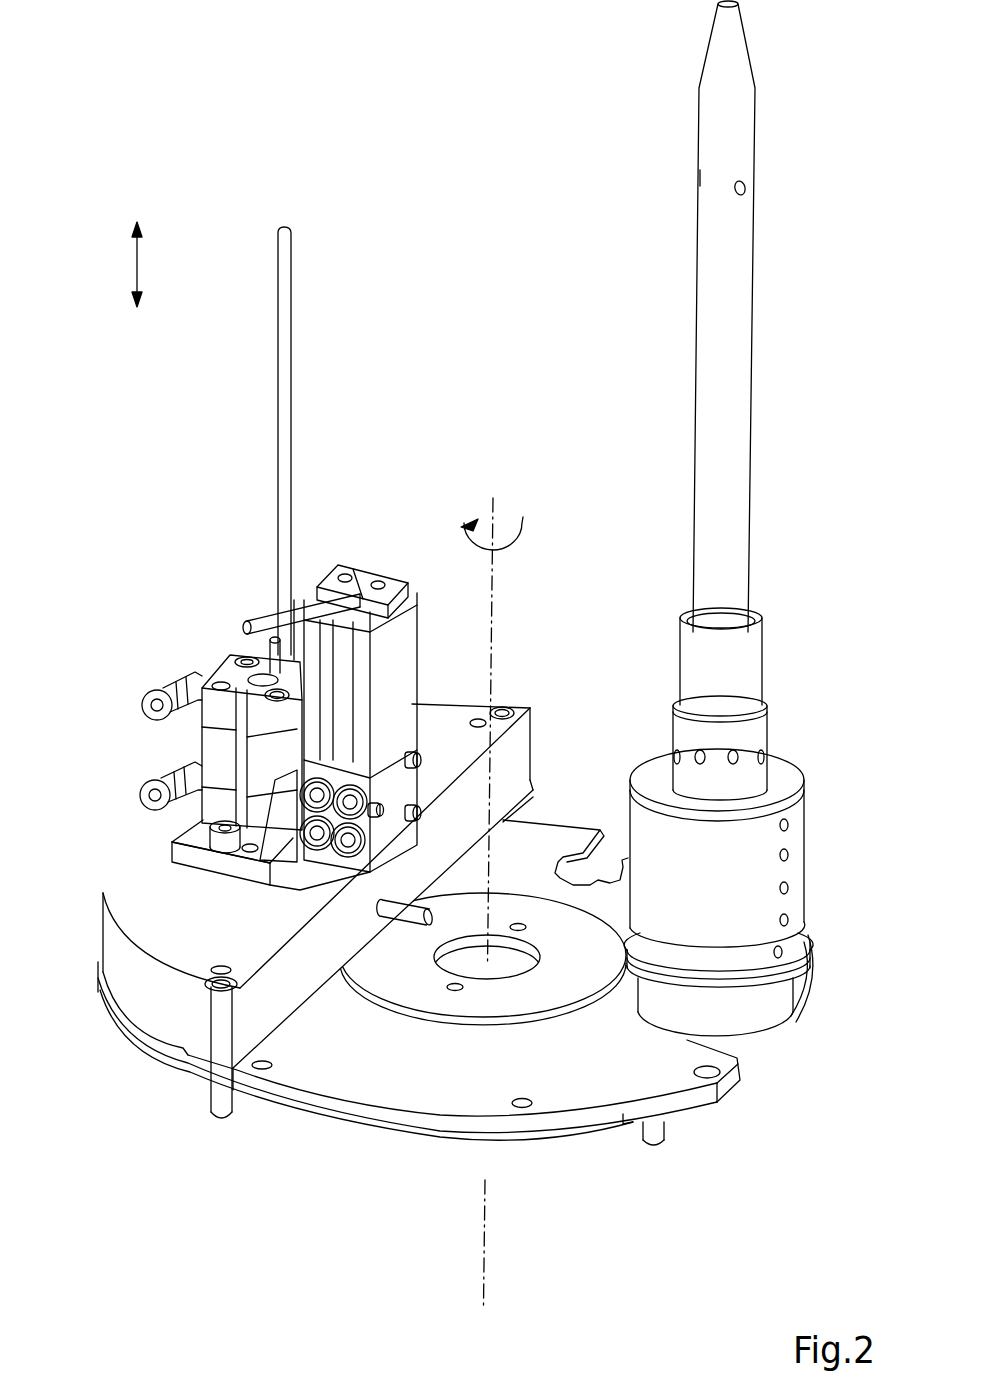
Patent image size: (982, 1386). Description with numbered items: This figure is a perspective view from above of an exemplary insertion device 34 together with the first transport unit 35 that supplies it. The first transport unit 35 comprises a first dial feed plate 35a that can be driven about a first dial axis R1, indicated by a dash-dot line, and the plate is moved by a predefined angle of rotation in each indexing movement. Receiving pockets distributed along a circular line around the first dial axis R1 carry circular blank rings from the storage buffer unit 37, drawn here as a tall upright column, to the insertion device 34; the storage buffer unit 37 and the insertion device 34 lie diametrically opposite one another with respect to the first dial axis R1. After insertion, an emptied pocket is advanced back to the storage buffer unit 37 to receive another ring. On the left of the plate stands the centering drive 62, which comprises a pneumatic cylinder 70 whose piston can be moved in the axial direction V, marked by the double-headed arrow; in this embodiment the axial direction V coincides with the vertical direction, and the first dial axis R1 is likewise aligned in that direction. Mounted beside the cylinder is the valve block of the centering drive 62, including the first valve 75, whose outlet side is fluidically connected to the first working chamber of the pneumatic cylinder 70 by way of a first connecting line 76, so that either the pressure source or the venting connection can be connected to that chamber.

The insertion device 34 is at (180, 600).
The first transport unit 35 is at (402, 1158).
The first dial feed plate 35a is at (806, 1008).
The storage buffer unit 37 is at (780, 386).
The centering drive 62 is at (176, 747).
The pneumatic cylinder 70 is at (210, 803).
The first valve 75 is at (350, 556).
The first connecting line 76 is at (390, 558).
The axial direction V is at (137, 261).
The first dial axis R1 is at (485, 1245).